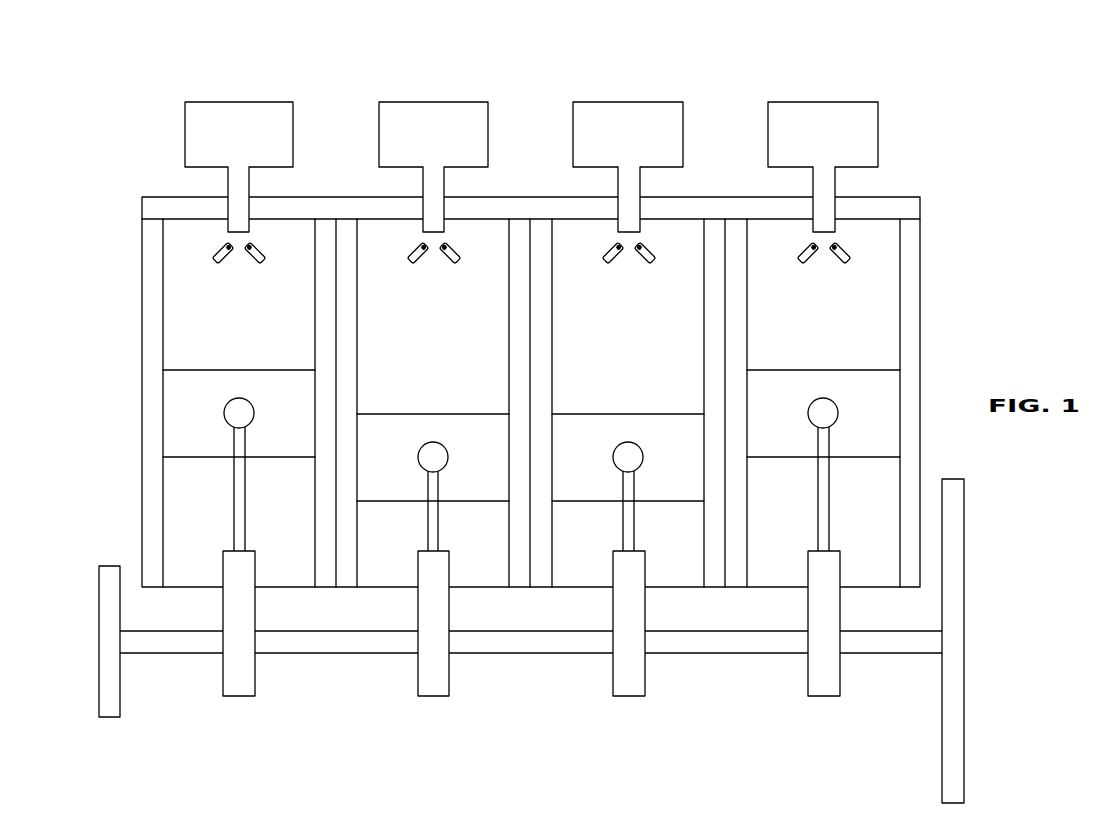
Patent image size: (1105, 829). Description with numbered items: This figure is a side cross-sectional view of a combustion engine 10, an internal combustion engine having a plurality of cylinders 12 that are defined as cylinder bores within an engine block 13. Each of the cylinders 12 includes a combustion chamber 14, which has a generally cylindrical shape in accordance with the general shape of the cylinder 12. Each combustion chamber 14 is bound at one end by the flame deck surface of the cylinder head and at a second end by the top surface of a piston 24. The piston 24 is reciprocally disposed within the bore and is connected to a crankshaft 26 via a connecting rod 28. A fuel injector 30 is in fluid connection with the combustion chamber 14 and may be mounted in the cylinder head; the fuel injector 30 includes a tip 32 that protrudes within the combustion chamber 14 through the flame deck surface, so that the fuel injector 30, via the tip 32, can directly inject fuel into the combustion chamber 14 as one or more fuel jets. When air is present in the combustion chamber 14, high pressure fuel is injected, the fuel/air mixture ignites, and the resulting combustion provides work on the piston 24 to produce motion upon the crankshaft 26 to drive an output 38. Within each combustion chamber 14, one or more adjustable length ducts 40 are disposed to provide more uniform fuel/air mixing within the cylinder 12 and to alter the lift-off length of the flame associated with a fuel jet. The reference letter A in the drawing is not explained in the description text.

The combustion engine 10 is at (922, 110).
The cylinder 12 is at (207, 292).
The engine block 13 is at (903, 197).
The combustion chamber 14 is at (227, 327).
The piston 24 is at (187, 436).
The crankshaft 26 is at (405, 655).
The connecting rod 28 is at (256, 551).
The fuel injector 30 is at (228, 102).
The tip 32 is at (252, 233).
The output 38 is at (964, 631).
The adjustable length duct 40 is at (222, 242).
The cylinder axis A is at (141, 457).